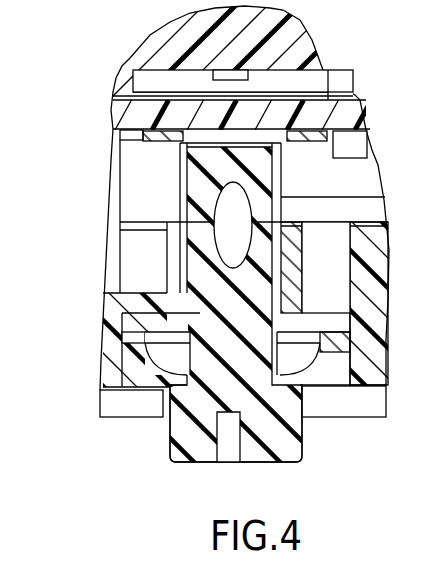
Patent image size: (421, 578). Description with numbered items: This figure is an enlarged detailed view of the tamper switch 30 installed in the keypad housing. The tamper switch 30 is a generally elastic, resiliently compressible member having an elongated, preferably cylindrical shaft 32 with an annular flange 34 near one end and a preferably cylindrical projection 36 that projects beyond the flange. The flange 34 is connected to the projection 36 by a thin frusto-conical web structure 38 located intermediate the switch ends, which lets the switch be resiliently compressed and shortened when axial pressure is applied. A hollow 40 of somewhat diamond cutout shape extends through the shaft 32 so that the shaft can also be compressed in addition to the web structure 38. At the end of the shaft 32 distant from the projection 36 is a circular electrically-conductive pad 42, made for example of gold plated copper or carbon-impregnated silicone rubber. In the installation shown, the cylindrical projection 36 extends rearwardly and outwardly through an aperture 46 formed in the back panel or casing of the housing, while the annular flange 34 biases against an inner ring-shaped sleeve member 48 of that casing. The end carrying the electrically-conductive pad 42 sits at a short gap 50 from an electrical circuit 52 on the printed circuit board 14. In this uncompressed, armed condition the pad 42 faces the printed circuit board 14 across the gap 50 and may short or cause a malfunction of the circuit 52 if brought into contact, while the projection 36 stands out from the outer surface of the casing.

The printed circuit board 14 is at (318, 113).
The tamper switch 30 is at (295, 458).
The shaft 32 is at (200, 280).
The annular flange 34 is at (148, 340).
The cylindrical projection 36 is at (168, 436).
The frusto-conical web structure 38 is at (163, 389).
The hollow 40 is at (223, 207).
The electrically-conductive pad 42 is at (183, 170).
The aperture 46 is at (302, 410).
The sleeve member 48 is at (165, 293).
The gap 50 is at (143, 153).
The electrical circuit 52 is at (243, 128).